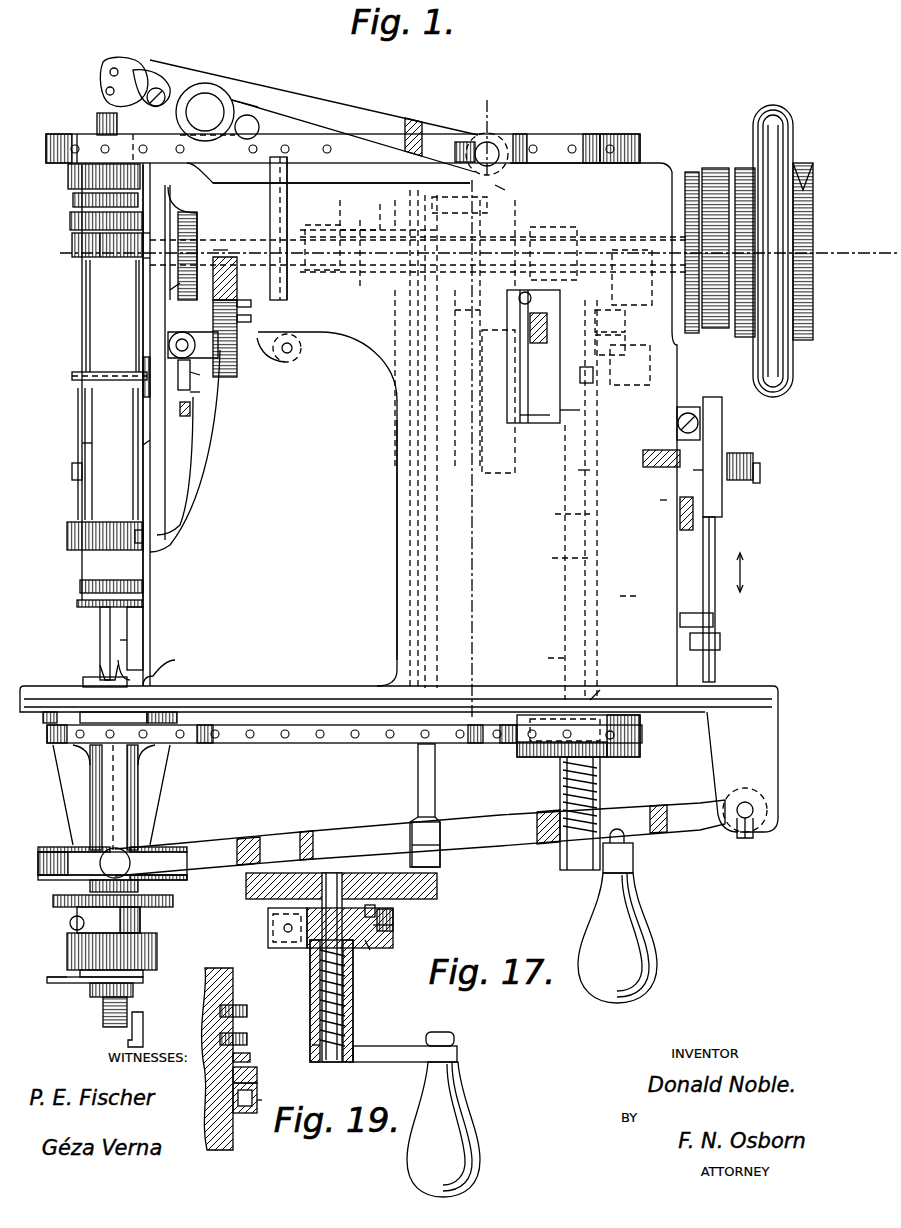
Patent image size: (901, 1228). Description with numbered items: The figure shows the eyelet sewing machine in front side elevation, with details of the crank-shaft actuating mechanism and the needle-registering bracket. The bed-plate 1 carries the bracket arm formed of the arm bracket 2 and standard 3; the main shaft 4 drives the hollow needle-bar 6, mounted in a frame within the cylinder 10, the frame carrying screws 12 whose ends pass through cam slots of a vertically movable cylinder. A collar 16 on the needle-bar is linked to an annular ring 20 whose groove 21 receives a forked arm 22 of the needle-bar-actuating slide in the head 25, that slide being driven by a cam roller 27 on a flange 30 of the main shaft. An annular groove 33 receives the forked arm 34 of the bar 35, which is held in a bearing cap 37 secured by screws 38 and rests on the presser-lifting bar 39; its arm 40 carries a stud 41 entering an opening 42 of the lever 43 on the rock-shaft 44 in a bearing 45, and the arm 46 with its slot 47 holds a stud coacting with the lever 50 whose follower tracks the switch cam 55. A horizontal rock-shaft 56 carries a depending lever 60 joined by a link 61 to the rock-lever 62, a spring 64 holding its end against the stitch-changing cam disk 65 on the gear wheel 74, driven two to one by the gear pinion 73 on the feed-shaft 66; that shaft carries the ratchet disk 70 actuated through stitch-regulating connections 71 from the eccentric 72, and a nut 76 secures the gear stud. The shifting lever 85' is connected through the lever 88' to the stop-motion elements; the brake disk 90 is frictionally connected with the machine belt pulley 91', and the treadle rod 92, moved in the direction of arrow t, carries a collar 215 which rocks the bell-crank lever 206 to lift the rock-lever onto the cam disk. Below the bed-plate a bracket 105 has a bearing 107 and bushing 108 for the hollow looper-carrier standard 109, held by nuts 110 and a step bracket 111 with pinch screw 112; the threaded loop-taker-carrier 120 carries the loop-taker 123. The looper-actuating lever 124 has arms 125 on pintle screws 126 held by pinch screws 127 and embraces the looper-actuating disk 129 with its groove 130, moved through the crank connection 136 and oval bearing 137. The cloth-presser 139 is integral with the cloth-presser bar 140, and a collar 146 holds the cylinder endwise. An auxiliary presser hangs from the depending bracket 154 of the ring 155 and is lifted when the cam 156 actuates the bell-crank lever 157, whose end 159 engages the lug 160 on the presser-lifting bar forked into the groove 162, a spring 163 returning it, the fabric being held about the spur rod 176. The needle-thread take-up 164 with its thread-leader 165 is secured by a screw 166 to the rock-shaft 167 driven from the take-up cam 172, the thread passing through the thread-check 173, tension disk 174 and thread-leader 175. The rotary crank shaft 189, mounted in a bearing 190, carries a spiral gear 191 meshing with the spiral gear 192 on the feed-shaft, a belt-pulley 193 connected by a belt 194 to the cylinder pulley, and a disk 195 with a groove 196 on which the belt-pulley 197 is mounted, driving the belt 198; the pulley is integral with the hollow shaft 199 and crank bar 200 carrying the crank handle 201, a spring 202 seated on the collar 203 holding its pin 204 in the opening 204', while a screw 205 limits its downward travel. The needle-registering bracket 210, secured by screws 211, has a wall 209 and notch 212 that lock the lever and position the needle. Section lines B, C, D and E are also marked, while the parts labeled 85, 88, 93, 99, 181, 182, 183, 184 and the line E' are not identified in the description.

In FIG. 1, the bed plate 1 is at (265, 687).
In FIG. 1, the arm 2 is at (355, 184).
In FIG. 19, the arm 2 is at (235, 1145).
In FIG. 1, the standard 3 is at (396, 606).
In FIG. 1, the main shaft 4 is at (226, 250).
In FIG. 1, the boss 6 is at (97, 118).
In FIG. 1, the needle bar sleeve 10 is at (82, 346).
In FIG. 1, the set screw 12 is at (72, 472).
In FIG. 1, the bushing 16 is at (82, 443).
In FIG. 1, the collar 20 is at (75, 240).
In FIG. 1, the collar 21 is at (70, 226).
In FIG. 1, the bearing 22 is at (112, 248).
In FIG. 1, the lever 25 is at (212, 445).
In FIG. 1, the gear 27 is at (145, 232).
In FIG. 1, the screw 30 is at (172, 290).
In FIG. 1, the flange 33 is at (72, 377).
In FIG. 1, the sleeve 34 is at (108, 388).
In FIG. 1, the collar 35 is at (145, 258).
In FIG. 1, the bearing 37 is at (68, 178).
In FIG. 1, the bearing 38 is at (133, 178).
In FIG. 1, the link 39 is at (170, 535).
In FIG. 1, the crank 40 is at (185, 334).
In FIG. 1, the pin 41 is at (190, 380).
In FIG. 1, the roller 42 is at (195, 345).
In FIG. 1, the bracket 43 is at (237, 370).
In FIG. 19, the bracket 43 is at (258, 1100).
In FIG. 1, the lever 44 is at (283, 366).
In FIG. 1, the pivot 45 is at (301, 350).
In FIG. 1, the stud 46 is at (237, 280).
In FIG. 1, the cam 47 is at (290, 218).
In FIG. 1, the bar 50 is at (300, 175).
In FIG. 1, the cam 55 is at (340, 232).
In FIG. 1, the shaft 56 is at (632, 240).
In FIG. 1, the slide 60 is at (608, 332).
In FIG. 1, the slide 61 is at (608, 312).
In FIG. 1, the pin 62 is at (582, 367).
In FIG. 1, the rod 64 is at (564, 517).
In FIG. 1, the pulley 65 is at (714, 168).
In FIG. 1, the block 66 is at (535, 345).
In FIG. 1, the housing 70 is at (510, 474).
In FIG. 1, the bracket 71 is at (560, 310).
In FIG. 1, the cam 72 is at (553, 230).
In FIG. 1, the spring 73 is at (630, 355).
In FIG. 1, the rod 74 is at (641, 596).
In FIG. 1, the guide 76 is at (693, 520).
In FIG. 1, the lever 85 is at (695, 411).
In FIG. 1, the lever arm 85' is at (734, 457).
In FIG. 1, the knob 88 is at (774, 473).
In FIG. 1, the knob collar 88' is at (756, 459).
In FIG. 1, the pulley 90 is at (742, 168).
In FIG. 1, the belt guard 91' is at (783, 240).
In FIG. 1, the rod 92 is at (715, 600).
In FIG. 1, the pin 93 is at (580, 471).
In FIG. 1, the spring 99 is at (709, 467).
In FIG. 1, the pedestal 105 is at (170, 830).
In FIG. 1, the drum 107 is at (157, 950).
In FIG. 1, the collar 108 is at (665, 502).
In FIG. 1, the stem 109 is at (138, 800).
In FIG. 1, the plate 110 is at (143, 980).
In FIG. 1, the flange 111 is at (173, 902).
In FIG. 1, the screw 112 is at (70, 925).
In FIG. 1, the bracket 120 is at (775, 752).
In FIG. 1, the block 123 is at (133, 715).
In FIG. 1, the lever 124 is at (490, 830).
In FIG. 1, the pivot boss 125 is at (768, 797).
In FIG. 1, the pivot pin 126 is at (755, 812).
In FIG. 1, the clevis 127 is at (758, 838).
In FIG. 1, the flange 129 is at (56, 847).
In FIG. 1, the shaft 130 is at (60, 862).
In FIG. 1, the link 136 is at (437, 775).
In FIG. 1, the collar 137 is at (441, 858).
In FIG. 1, the presser foot 139 is at (83, 682).
In FIG. 1, the presser bar 140 is at (143, 636).
In FIG. 1, the collar 146 is at (73, 200).
In FIG. 1, the needle bar 154 is at (100, 630).
In FIG. 1, the collar 155 is at (77, 605).
In FIG. 1, the gear 156 is at (197, 222).
In FIG. 1, the pin 157 is at (195, 375).
In FIG. 1, the pin 159 is at (193, 392).
In FIG. 1, the block 160 is at (190, 410).
In FIG. 1, the collar 162 is at (80, 588).
In FIG. 1, the bar 163 is at (146, 358).
In FIG. 1, the arm 164 is at (318, 102).
In FIG. 1, the bracket 165 is at (122, 62).
In FIG. 1, the hub 166 is at (497, 140).
In FIG. 1, the ratchet 167 is at (468, 140).
In FIG. 1, the link 172 is at (460, 207).
In FIG. 1, the link 173 is at (265, 108).
In FIG. 1, the pulley 174 is at (215, 95).
In FIG. 1, the bracket 175 is at (160, 80).
In FIG. 1, the foot 176 is at (130, 672).
In FIG. 1, the bracket 181 is at (143, 1036).
In FIG. 1, the nut 182 is at (103, 1012).
In FIG. 1, the guide 183 is at (104, 668).
In FIG. 1, the plate 184 is at (67, 985).
In FIG. 1, the rod 189 is at (542, 661).
In FIG. 1, the rod 190 is at (592, 700).
In FIG. 1, the plate 191 is at (528, 425).
In FIG. 1, the plate 192 is at (575, 435).
In FIG. 1, the bar 193 is at (528, 142).
In FIG. 1, the bar end 194 is at (640, 146).
In FIG. 17, the nut 195 is at (393, 914).
In FIG. 17, the plate 196 is at (380, 898).
In FIG. 1, the bracket 197 is at (641, 752).
In FIG. 17, the bracket 197 is at (393, 944).
In FIG. 1, the rail 198 is at (350, 745).
In FIG. 1, the housing 199 is at (600, 800).
In FIG. 17, the housing 199 is at (353, 1005).
In FIG. 1, the arm 200 is at (655, 856).
In FIG. 17, the arm 200 is at (375, 1050).
In FIG. 1, the handle 201 is at (658, 942).
In FIG. 17, the handle 201 is at (468, 1114).
In FIG. 1, the spring 202 is at (562, 790).
In FIG. 17, the spring 202 is at (315, 992).
In FIG. 17, the nut 203 is at (312, 1045).
In FIG. 17, the pin 204 is at (380, 960).
In FIG. 17, the pin 204' is at (424, 916).
In FIG. 17, the washer 205 is at (395, 928).
In FIG. 1, the nut 206 is at (713, 620).
In FIG. 19, the washer 209 is at (250, 1058).
In FIG. 1, the block 210 is at (250, 318).
In FIG. 19, the block 210 is at (257, 1090).
In FIG. 1, the screw 211 is at (250, 301).
In FIG. 19, the screw 211 is at (247, 1014).
In FIG. 19, the washer 212 is at (257, 1073).
In FIG. 1, the nut 215 is at (720, 642).
In FIG. 1, the belt B is at (808, 387).
In FIG. 1, the pulley C is at (260, 127).
In FIG. 1, the point D is at (635, 735).
In FIG. 1, the point E is at (486, 719).
In FIG. 1, the axis E' is at (493, 92).
In FIG. 1, the direction t is at (748, 572).